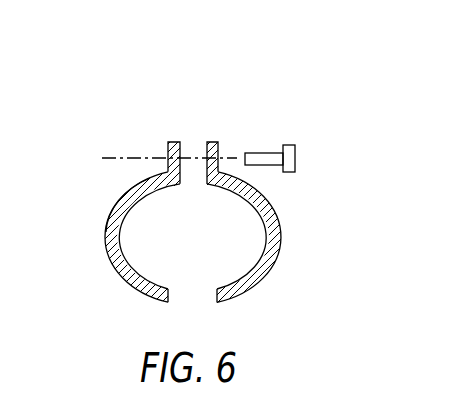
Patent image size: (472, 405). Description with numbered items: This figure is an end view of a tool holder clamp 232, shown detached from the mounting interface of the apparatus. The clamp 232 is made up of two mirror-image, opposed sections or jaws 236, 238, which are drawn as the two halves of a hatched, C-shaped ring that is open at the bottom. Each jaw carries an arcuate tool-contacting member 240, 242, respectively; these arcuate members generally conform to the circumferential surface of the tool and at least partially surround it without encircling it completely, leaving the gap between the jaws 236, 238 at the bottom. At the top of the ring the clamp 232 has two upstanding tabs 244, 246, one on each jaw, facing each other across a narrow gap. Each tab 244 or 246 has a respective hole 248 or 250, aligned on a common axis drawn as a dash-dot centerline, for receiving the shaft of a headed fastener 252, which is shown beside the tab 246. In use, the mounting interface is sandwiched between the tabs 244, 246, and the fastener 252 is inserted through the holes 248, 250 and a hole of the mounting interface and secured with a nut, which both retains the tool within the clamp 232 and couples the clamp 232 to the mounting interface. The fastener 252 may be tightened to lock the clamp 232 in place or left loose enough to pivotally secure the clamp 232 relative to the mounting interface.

The clamp 232 is at (226, 88).
The section or jaw 236 is at (128, 308).
The section or jaw 238 is at (292, 288).
The arcuate tool-contacting member 240 is at (105, 231).
The arcuate tool-contacting member 242 is at (282, 237).
The tab 244 is at (168, 142).
The tab 246 is at (218, 142).
The hole 248 is at (146, 148).
The hole 250 is at (240, 145).
The headed fastener 252 is at (268, 166).